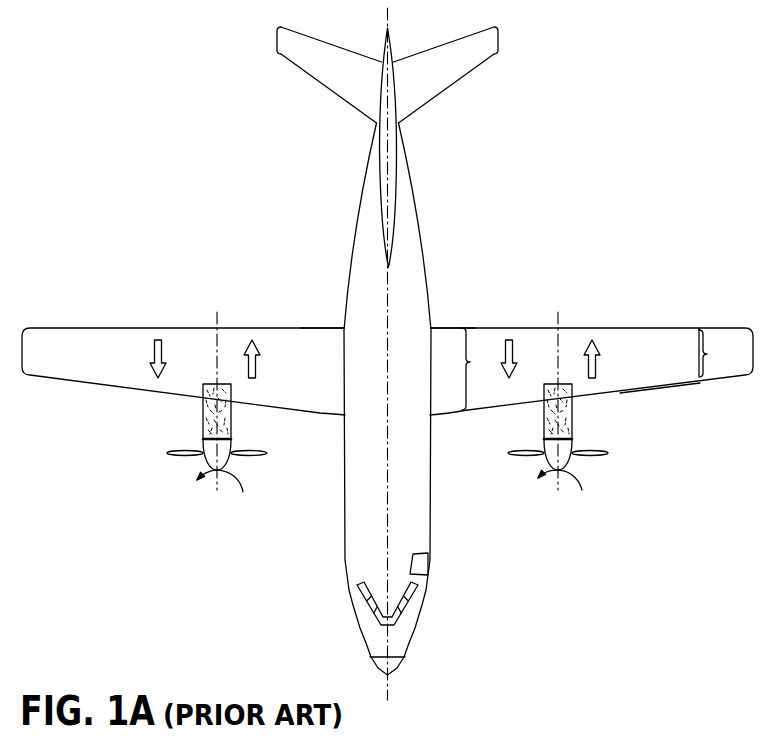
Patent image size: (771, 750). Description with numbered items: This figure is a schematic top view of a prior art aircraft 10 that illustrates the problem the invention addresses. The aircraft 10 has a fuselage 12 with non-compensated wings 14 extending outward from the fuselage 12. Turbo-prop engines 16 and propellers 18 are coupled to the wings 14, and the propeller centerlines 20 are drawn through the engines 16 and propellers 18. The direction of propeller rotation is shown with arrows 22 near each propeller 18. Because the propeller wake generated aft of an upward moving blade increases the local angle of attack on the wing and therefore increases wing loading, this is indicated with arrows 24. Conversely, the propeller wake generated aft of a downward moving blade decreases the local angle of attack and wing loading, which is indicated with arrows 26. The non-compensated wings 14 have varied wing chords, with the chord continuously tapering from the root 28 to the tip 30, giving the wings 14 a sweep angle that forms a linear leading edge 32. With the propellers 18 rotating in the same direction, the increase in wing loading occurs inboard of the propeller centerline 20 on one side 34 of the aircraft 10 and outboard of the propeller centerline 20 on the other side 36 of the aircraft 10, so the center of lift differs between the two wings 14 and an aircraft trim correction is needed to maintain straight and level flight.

The prior art aircraft 10 is at (387, 354).
The fuselage 12 is at (429, 276).
The non-compensated wings 14 is at (88, 338).
The turbo-prop engines 16 is at (202, 423).
The propellers 18 is at (210, 462).
The propeller centerlines 20 is at (216, 315).
The arrows indicating direction of propeller rotation 22 is at (243, 492).
The arrows indicating increase in wing loading 24 is at (258, 342).
The arrows indicating decrease in wing loading 26 is at (152, 348).
The root 28 is at (478, 369).
The tip 30 is at (715, 353).
The linear leading edge 32 is at (660, 388).
The one side of the aircraft 34 is at (335, 328).
The other side of the aircraft 36 is at (453, 328).